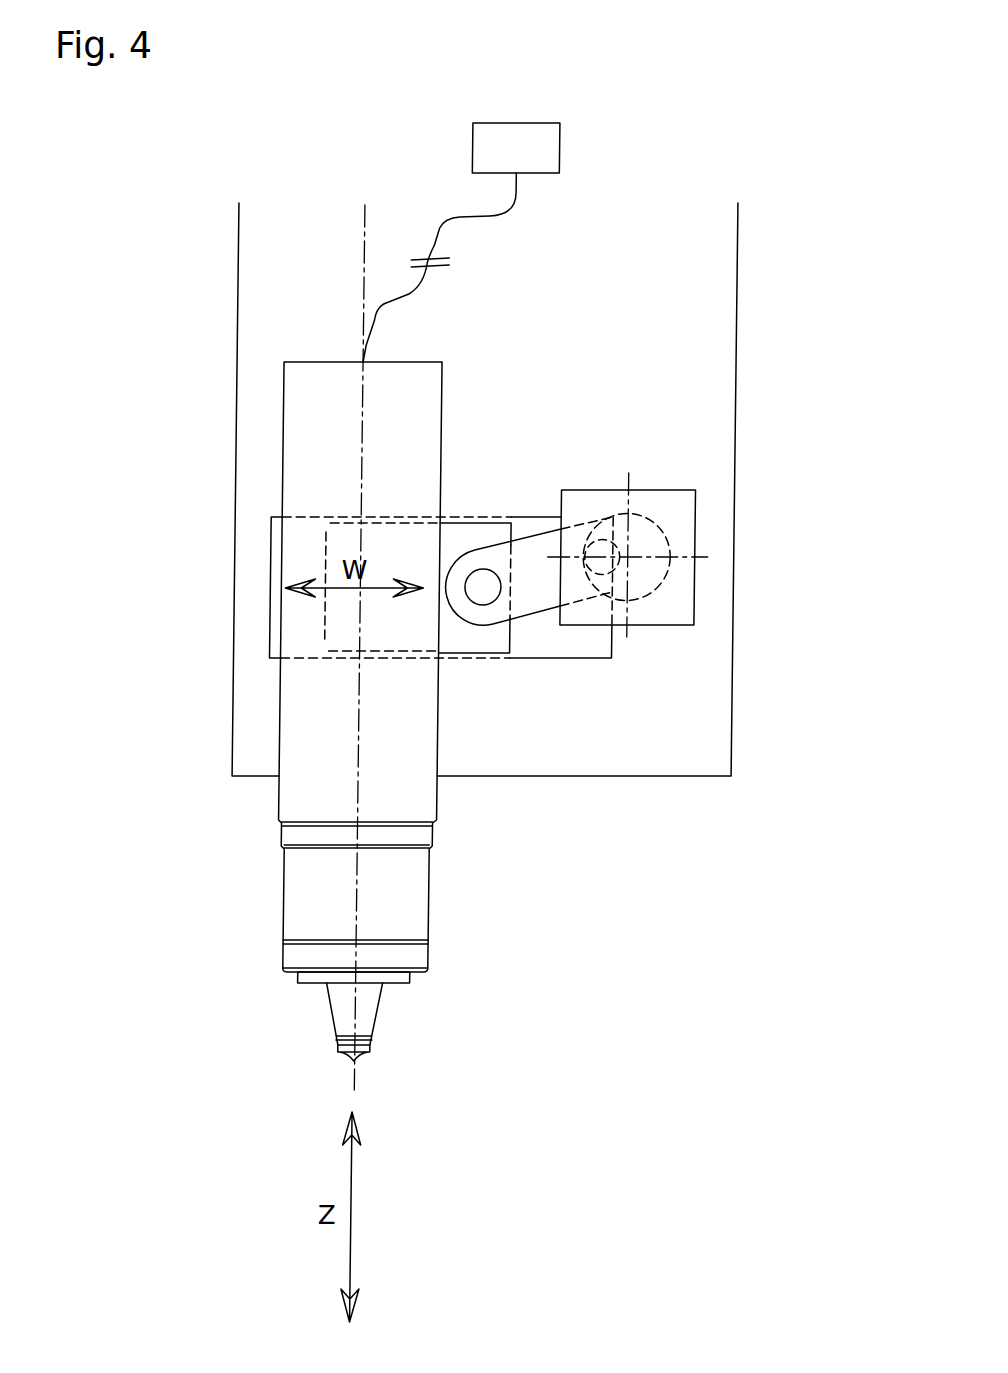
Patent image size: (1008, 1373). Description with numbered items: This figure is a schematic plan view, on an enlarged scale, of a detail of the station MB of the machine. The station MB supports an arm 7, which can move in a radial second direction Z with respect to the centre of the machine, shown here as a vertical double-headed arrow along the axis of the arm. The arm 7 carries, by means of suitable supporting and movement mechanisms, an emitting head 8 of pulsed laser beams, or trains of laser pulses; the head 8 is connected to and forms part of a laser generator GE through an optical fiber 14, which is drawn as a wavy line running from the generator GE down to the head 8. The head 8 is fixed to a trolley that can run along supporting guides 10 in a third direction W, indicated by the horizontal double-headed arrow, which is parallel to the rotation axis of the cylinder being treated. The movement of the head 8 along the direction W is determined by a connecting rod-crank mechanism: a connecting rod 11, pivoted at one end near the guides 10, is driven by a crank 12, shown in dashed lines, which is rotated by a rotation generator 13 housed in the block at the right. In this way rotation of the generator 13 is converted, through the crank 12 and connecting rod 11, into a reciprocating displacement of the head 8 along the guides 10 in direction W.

The arm 7 is at (277, 278).
The emitting head 8 is at (318, 445).
The supporting guides 10 is at (281, 585).
The connecting rod 11 is at (528, 600).
The crank 12 is at (653, 598).
The rotation generator 13 is at (687, 512).
The optical fiber 14 is at (442, 222).
The laser generator GE is at (516, 148).
The station MB is at (607, 218).